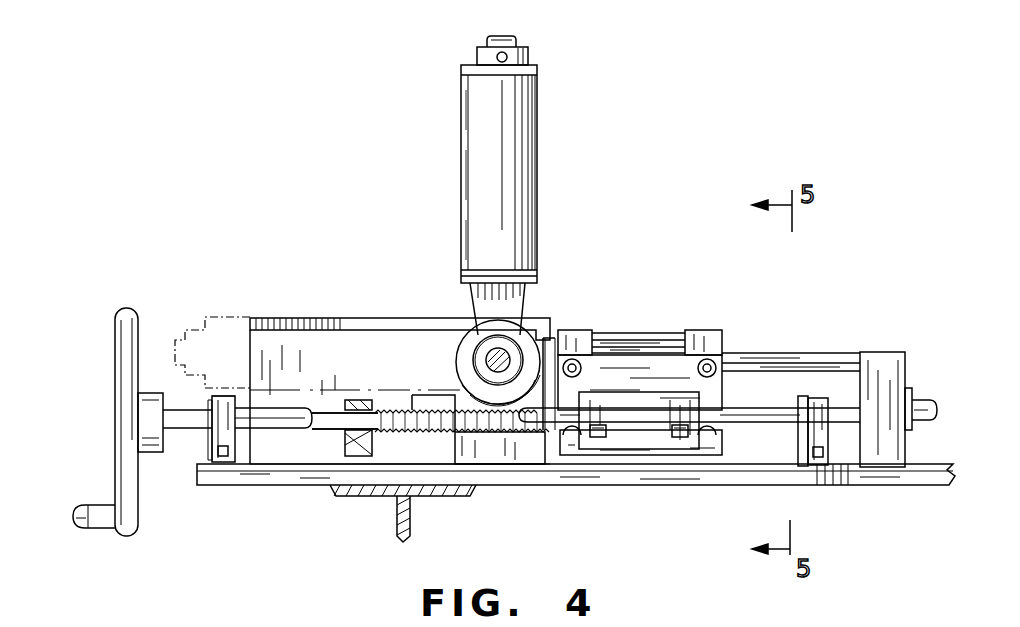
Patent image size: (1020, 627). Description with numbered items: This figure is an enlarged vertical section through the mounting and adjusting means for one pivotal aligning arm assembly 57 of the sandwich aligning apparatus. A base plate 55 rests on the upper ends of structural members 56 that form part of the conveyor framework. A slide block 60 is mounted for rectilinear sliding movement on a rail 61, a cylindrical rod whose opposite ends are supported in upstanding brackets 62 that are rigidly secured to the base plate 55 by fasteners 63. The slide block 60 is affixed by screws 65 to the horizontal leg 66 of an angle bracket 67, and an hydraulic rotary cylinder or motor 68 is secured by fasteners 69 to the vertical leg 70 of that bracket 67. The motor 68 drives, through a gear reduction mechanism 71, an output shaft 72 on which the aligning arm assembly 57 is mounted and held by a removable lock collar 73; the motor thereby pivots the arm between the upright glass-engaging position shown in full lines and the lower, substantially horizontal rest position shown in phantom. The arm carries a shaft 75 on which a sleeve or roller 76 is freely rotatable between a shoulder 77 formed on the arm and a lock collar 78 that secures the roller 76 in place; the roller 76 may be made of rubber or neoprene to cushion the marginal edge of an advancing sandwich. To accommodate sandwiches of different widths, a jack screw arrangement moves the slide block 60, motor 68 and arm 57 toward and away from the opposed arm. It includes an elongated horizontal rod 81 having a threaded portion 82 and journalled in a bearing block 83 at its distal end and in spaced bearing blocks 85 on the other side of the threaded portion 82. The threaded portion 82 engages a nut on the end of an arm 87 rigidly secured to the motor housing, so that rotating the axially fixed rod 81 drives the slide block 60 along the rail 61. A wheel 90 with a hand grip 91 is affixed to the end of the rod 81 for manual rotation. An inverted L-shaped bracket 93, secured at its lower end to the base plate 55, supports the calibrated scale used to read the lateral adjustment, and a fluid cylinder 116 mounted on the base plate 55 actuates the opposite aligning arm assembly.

The base plate 55 is at (700, 478).
The structural members 56 is at (373, 490).
The pivotal aligning arm assembly 57 is at (198, 323).
The slide block 60 is at (652, 430).
The rail 61 is at (270, 422).
The upstanding brackets 62 is at (222, 432).
The fasteners 63 is at (223, 458).
The screws 65 is at (674, 426).
The horizontal leg 66 is at (600, 457).
The angle bracket 67 is at (670, 340).
The hydraulic rotary cylinder or motor 68 is at (617, 333).
The fasteners 69 is at (574, 360).
The vertical leg 70 is at (645, 368).
The gear reduction mechanism 71 is at (474, 423).
The output shaft 72 is at (512, 342).
The removable lock collar 73 is at (483, 343).
The shaft 75 is at (497, 36).
The sleeve or roller 76 is at (531, 180).
The shoulder 77 is at (465, 278).
The lock collar 78 is at (525, 52).
The rod 81 is at (328, 412).
The threaded portion 82 is at (393, 410).
The bearing block 83 is at (802, 396).
The bearing blocks 85 is at (212, 408).
The arm 87 is at (743, 395).
The wheel 90 is at (122, 308).
The hand grip 91 is at (82, 524).
The inverted L-shaped bracket 93 is at (262, 348).
The fluid cylinder 116 is at (888, 352).